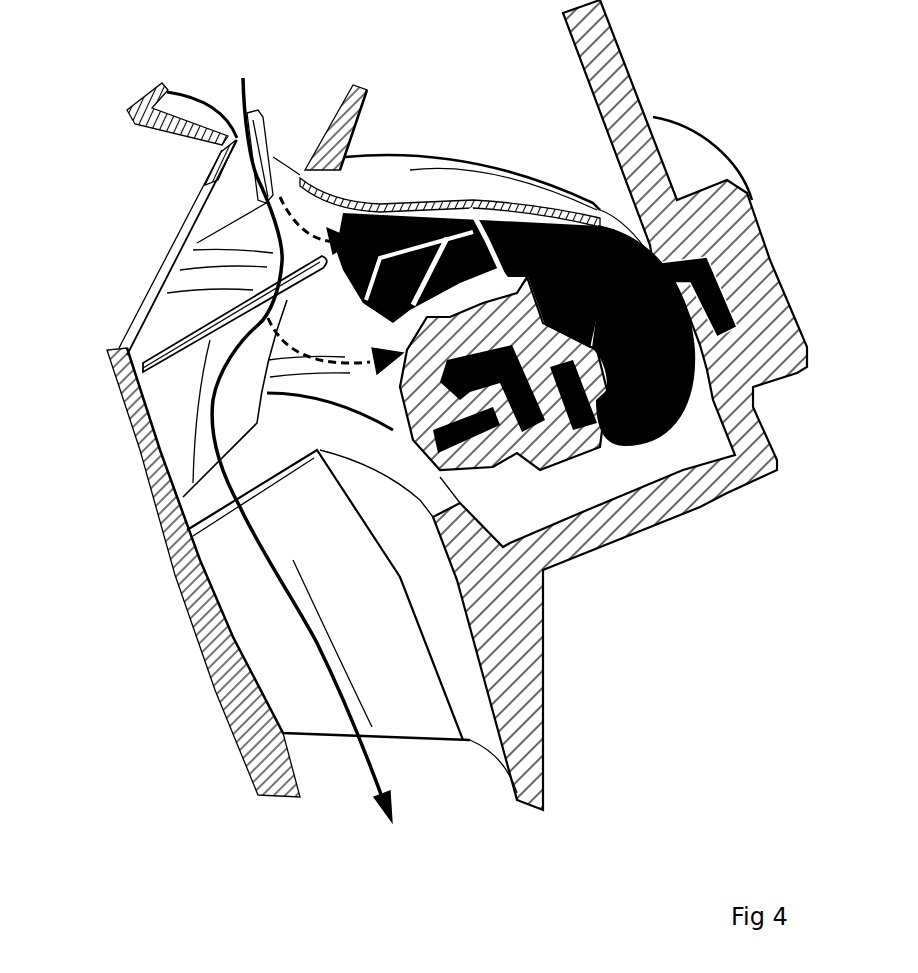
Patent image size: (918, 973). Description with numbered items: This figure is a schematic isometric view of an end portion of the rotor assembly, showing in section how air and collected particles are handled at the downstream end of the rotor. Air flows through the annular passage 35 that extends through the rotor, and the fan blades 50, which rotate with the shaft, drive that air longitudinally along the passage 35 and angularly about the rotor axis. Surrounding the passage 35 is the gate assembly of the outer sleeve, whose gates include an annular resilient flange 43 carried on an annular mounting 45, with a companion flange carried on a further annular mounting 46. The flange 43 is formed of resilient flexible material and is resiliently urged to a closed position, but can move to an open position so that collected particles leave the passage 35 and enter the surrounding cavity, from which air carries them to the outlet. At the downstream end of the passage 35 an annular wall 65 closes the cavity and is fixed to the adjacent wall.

The annular passage 35 is at (378, 400).
The annular resilient flange 43 is at (423, 307).
The annular mounting 45 is at (352, 247).
The annular mounting 46 is at (536, 215).
The fan blades 50 is at (258, 178).
The annular wall 65 is at (660, 432).